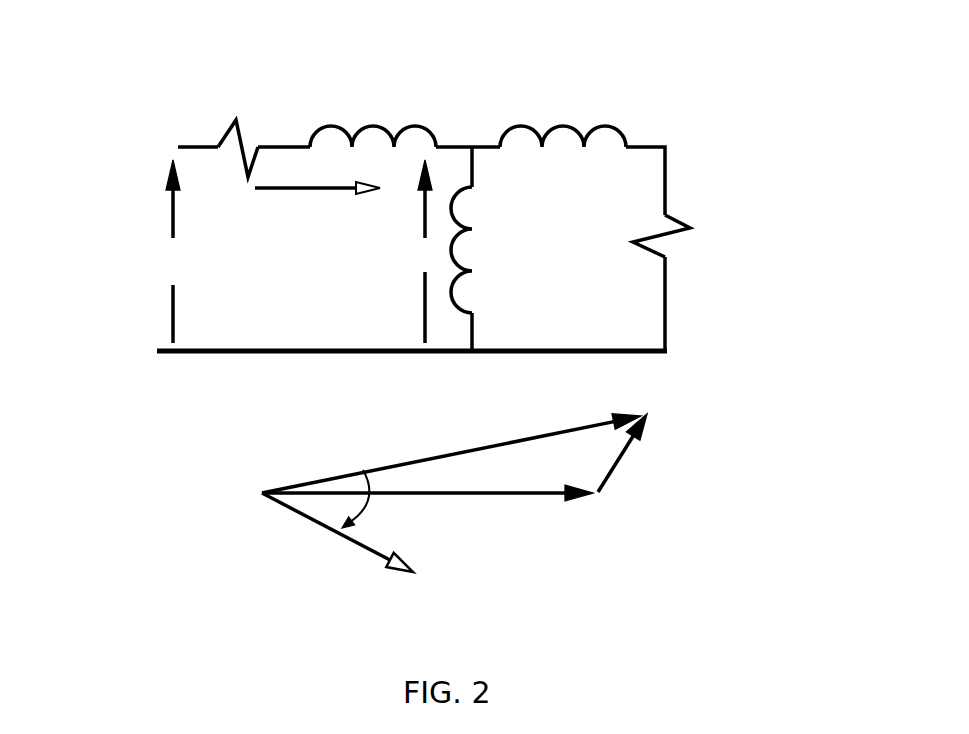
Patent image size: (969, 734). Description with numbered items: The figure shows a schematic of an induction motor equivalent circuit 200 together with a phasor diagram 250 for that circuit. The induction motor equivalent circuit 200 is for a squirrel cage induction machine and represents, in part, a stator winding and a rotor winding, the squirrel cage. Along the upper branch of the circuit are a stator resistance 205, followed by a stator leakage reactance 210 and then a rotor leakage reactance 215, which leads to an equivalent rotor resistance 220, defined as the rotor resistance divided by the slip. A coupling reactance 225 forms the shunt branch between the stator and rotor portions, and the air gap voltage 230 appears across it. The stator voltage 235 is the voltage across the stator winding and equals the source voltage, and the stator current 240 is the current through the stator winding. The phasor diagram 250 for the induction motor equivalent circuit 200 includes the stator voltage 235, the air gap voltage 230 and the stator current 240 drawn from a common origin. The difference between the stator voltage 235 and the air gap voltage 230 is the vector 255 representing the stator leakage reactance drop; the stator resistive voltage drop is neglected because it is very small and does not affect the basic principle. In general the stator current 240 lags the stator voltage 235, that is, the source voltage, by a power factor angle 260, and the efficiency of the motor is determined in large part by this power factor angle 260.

The induction motor equivalent circuit 200 is at (130, 48).
The stator resistance 205 is at (243, 72).
The stator leakage reactance 210 is at (380, 72).
The rotor leakage reactance 215 is at (547, 72).
The equivalent rotor resistance 220 is at (717, 203).
The coupling reactance 225 is at (497, 222).
The air gap voltage 230 is at (427, 282).
The stator voltage 235 is at (160, 267).
The stator current 240 is at (327, 235).
The phasor diagram 250 is at (166, 489).
The vector jI1X1 255 is at (612, 478).
The power factor angle 260 is at (390, 520).